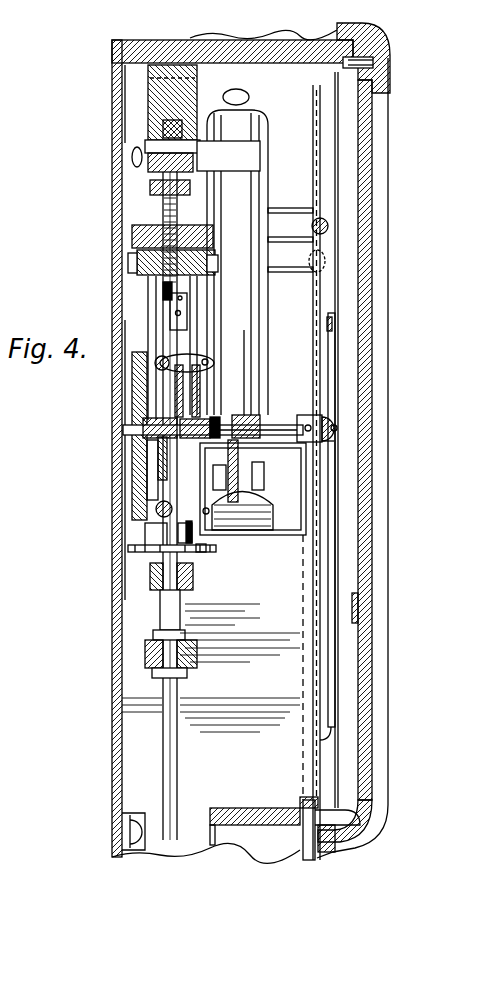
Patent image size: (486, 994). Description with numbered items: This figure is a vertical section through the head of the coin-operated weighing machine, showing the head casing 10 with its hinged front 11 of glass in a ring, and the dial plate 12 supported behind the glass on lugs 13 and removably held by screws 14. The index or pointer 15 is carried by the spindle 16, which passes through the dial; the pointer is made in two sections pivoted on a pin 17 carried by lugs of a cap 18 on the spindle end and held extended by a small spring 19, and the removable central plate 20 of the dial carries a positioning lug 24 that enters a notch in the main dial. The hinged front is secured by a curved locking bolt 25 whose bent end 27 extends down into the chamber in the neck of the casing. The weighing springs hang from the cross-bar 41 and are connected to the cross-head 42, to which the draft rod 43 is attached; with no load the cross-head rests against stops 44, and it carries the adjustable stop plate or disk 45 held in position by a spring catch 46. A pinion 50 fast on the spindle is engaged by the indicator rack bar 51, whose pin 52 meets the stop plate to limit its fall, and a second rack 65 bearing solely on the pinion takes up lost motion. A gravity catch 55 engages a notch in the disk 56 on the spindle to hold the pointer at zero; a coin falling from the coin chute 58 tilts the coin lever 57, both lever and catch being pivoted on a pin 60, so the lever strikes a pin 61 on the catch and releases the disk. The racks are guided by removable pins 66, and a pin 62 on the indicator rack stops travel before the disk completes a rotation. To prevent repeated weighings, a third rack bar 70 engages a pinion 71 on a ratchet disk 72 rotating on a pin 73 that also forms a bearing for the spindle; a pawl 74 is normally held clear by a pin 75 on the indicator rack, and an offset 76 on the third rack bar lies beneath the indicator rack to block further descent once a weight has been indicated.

The head casing 10 is at (112, 228).
The hinged front 11 is at (390, 62).
The dial plate 12 is at (313, 120).
The lugs 13 is at (300, 272).
The screws 14 is at (322, 260).
The index or pointer 15 is at (340, 517).
The spindle 16 is at (285, 420).
The pin 17 is at (343, 431).
The cap 18 is at (318, 420).
The spring 19 is at (343, 418).
The central plate 20 is at (328, 324).
The positioning lug 24 is at (314, 220).
The locking bolt 25 is at (303, 800).
The bent end 27 is at (312, 832).
The cross-bar 41 is at (132, 240).
The cross-head 42 is at (180, 588).
The draft rod 43 is at (178, 757).
The stops 44 is at (244, 540).
The stop plate or disk 45 is at (200, 556).
The spring catch 46 is at (216, 552).
The pinion 50 is at (207, 420).
The rack bar 51 is at (212, 362).
The pin 52 is at (213, 541).
The gravity catch 55 is at (262, 437).
The disk 56 is at (215, 415).
The coin lever 57 is at (233, 492).
The coin chute 58 is at (237, 252).
The pin 60 is at (271, 488).
The pin 61 is at (266, 474).
The pin 62 is at (184, 309).
The second rack 65 is at (198, 384).
The pins 66 is at (246, 355).
The third rack bar 70 is at (148, 321).
The pinion 71 is at (142, 445).
The disk 72 is at (160, 462).
The pin 73 is at (123, 432).
The pawl 74 is at (147, 412).
The pin 75 is at (184, 316).
The offset 76 is at (150, 540).